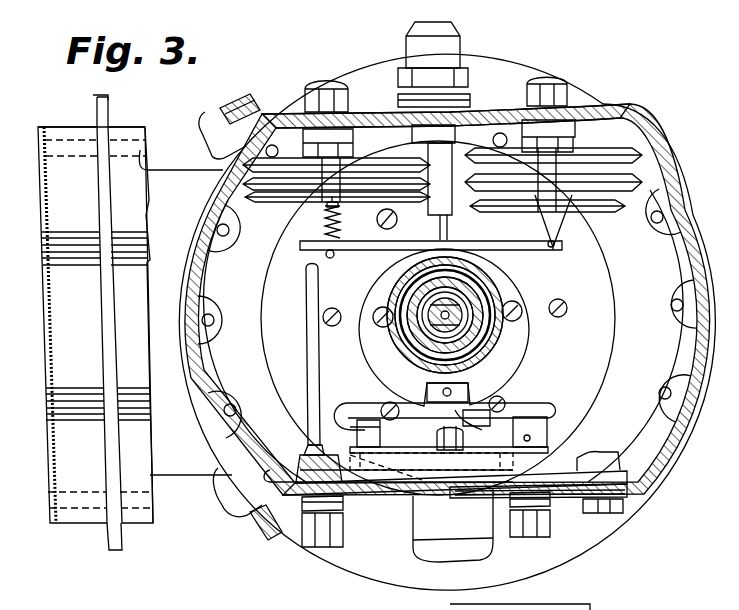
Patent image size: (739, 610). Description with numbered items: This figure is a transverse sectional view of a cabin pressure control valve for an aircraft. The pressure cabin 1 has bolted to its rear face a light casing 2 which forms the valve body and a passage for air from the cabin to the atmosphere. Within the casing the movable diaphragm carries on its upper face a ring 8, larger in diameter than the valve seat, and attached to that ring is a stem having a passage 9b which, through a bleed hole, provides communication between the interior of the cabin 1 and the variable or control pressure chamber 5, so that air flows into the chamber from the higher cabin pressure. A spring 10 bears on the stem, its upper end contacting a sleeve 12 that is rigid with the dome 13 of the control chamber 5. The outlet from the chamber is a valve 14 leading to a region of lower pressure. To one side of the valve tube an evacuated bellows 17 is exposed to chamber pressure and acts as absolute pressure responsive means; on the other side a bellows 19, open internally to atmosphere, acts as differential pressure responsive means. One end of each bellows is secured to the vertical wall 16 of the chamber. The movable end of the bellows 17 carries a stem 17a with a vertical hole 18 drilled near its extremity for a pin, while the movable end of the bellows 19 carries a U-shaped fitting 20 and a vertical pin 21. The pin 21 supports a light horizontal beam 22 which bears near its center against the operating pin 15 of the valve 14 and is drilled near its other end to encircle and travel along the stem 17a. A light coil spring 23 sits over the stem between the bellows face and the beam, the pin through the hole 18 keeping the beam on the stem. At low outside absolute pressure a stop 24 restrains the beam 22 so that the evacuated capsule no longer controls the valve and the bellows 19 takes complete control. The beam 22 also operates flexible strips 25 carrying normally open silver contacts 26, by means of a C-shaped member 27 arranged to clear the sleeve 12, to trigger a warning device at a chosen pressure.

The pressure cabin 1 is at (112, 114).
The casing 2 is at (177, 178).
The control pressure chamber 5 is at (637, 331).
The ring 8 is at (600, 373).
The passage 9b is at (470, 356).
The spring 10 is at (490, 296).
The sleeve 12 is at (530, 328).
The dome 13 is at (690, 254).
The valve 14 is at (450, 160).
The operating pin 15 is at (437, 232).
The vertical wall 16 is at (500, 108).
The bellows 17 is at (285, 158).
The stem 17a is at (341, 230).
The hole 18 is at (326, 254).
The bellows 19 is at (620, 106).
The U-shaped fitting 20 is at (560, 227).
The vertical pin 21 is at (574, 247).
The horizontal beam 22 is at (534, 247).
The coil spring 23 is at (322, 222).
The stop 24 is at (305, 297).
The flexible strips 25 is at (427, 420).
The silver contacts 26 is at (465, 418).
The C-shaped member 27 is at (373, 357).